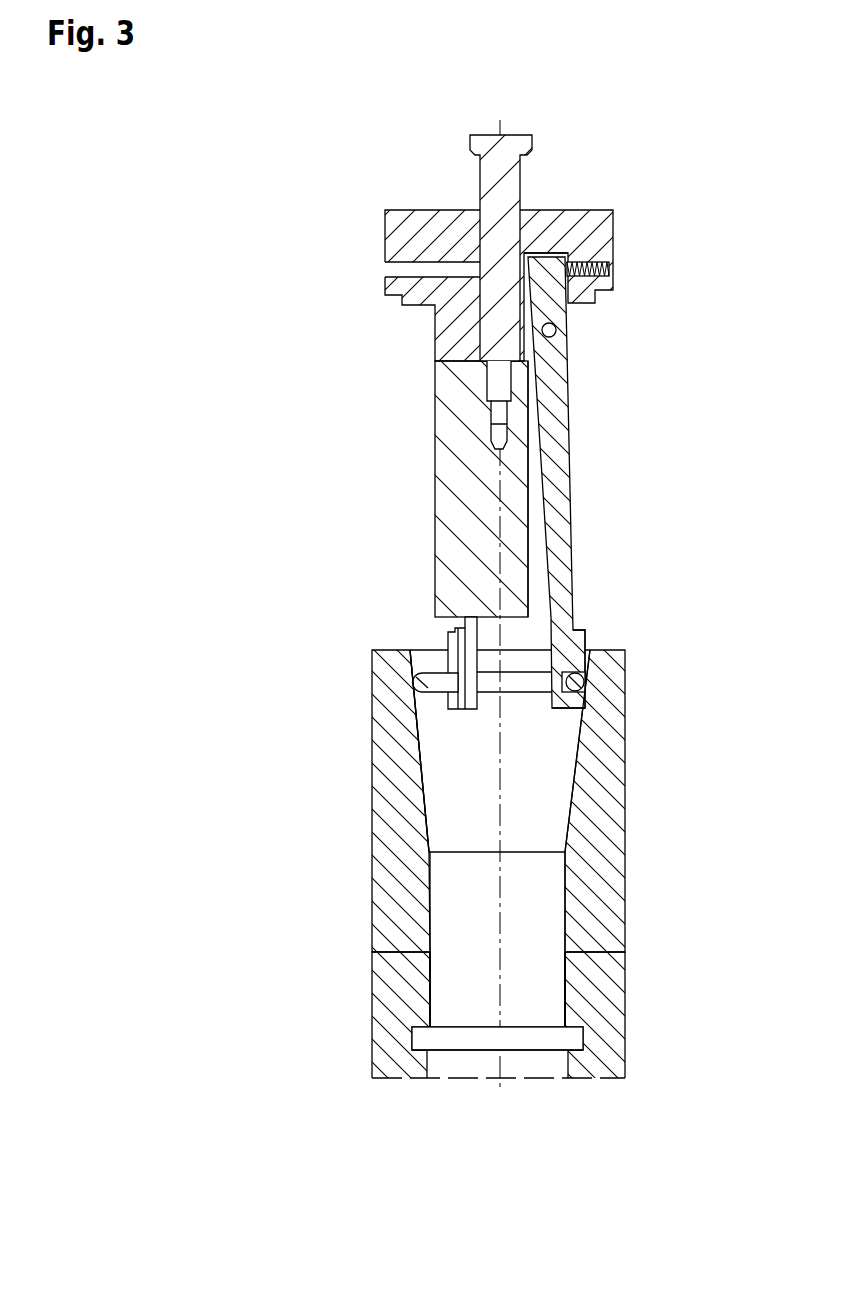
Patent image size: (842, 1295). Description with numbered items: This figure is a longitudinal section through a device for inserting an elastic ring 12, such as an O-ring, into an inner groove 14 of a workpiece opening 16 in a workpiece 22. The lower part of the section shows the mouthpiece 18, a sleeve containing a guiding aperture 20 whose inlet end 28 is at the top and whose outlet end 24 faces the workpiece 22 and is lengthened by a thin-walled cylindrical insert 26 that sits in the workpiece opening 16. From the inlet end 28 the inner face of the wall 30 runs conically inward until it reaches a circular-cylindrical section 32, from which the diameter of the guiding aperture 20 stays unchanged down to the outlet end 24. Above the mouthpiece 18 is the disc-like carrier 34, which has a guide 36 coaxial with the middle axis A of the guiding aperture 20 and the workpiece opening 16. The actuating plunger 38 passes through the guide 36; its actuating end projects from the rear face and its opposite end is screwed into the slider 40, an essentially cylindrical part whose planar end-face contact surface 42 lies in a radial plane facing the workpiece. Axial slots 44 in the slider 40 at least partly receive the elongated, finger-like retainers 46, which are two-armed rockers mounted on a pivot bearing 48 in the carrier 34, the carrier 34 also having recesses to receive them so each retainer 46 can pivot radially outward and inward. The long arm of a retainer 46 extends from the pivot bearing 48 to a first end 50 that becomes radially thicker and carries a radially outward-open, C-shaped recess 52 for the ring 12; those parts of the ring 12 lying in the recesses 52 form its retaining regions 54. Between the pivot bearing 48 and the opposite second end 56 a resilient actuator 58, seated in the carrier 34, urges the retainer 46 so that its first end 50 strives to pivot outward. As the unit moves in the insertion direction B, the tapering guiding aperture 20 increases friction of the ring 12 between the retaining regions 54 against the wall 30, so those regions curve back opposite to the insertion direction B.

The elastic ring 12 is at (499, 683).
The inner groove 14 is at (586, 1027).
The workpiece opening 16 is at (445, 1070).
The mouthpiece 18 is at (608, 827).
The guiding aperture 20 is at (442, 821).
The workpiece 22 is at (612, 1037).
The outlet end 24 is at (463, 985).
The thin-walled cylindrical insert 26 is at (570, 982).
The inlet end 28 is at (417, 659).
The wall 30 is at (385, 756).
The circular-cylindrical section 32 is at (541, 898).
The carrier 34 is at (385, 232).
The guide 36 is at (482, 238).
The actuating plunger 38 is at (493, 182).
The slider 40 is at (443, 445).
The end-face contact surface 42 is at (445, 626).
The axial slots 44 is at (534, 562).
The retainers 46 is at (562, 481).
The pivot bearing 48 is at (557, 332).
The first end 50 is at (580, 643).
The recess 52 is at (590, 652).
The retaining regions 54 is at (592, 677).
The second end 56 is at (575, 250).
The resilient actuator 58 is at (610, 270).
The middle axis A is at (508, 772).
The insertion direction B is at (415, 483).